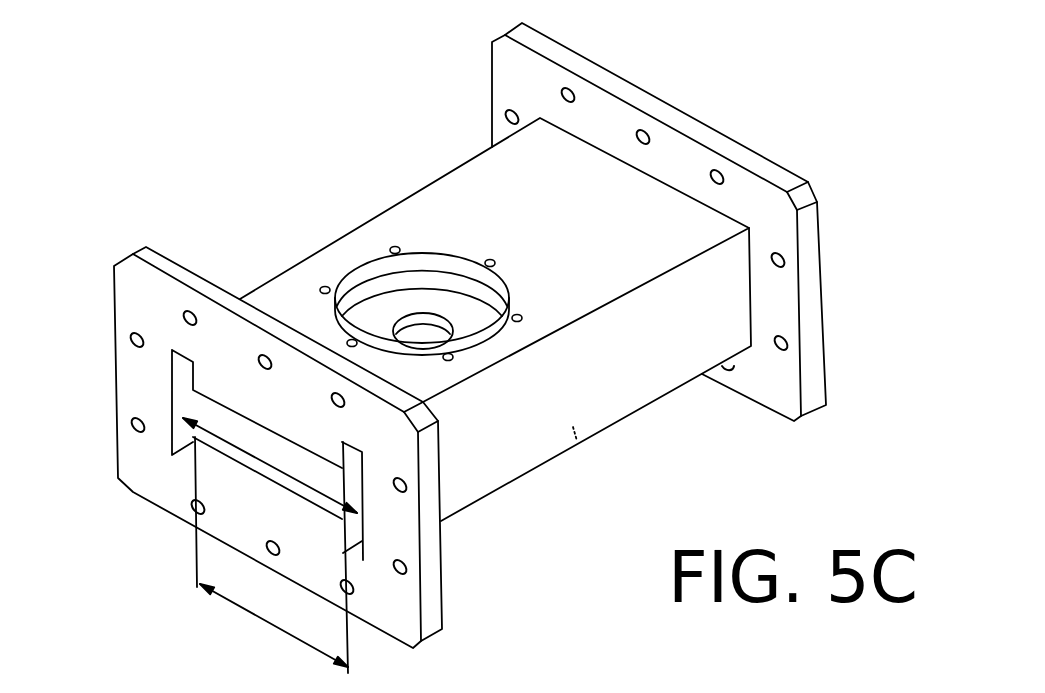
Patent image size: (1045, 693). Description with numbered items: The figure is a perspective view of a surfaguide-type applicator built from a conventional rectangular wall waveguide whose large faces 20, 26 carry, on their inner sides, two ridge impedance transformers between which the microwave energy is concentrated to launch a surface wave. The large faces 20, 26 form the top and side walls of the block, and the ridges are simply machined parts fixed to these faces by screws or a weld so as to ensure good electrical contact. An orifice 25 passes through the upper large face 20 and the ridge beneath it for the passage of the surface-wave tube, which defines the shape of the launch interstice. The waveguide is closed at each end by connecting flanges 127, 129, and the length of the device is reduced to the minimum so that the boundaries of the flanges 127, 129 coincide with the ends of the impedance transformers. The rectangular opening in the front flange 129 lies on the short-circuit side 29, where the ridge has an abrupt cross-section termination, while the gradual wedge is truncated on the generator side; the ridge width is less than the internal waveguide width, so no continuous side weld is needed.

The large face 20 is at (477, 170).
The orifice 25 is at (387, 287).
The large face 26 is at (573, 447).
The short-circuit side 29 is at (228, 432).
The flange 127 is at (733, 150).
The flange 129 is at (436, 590).